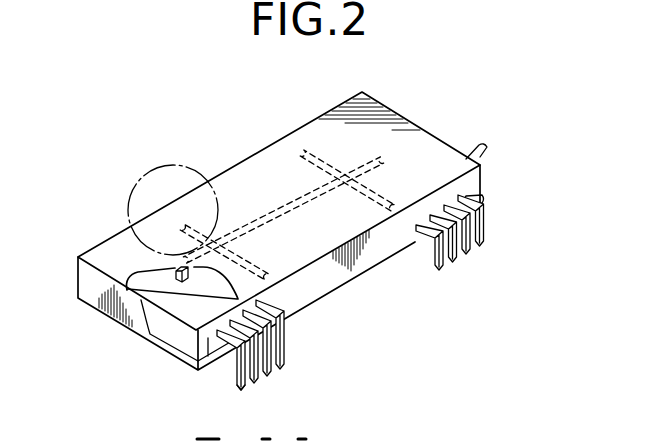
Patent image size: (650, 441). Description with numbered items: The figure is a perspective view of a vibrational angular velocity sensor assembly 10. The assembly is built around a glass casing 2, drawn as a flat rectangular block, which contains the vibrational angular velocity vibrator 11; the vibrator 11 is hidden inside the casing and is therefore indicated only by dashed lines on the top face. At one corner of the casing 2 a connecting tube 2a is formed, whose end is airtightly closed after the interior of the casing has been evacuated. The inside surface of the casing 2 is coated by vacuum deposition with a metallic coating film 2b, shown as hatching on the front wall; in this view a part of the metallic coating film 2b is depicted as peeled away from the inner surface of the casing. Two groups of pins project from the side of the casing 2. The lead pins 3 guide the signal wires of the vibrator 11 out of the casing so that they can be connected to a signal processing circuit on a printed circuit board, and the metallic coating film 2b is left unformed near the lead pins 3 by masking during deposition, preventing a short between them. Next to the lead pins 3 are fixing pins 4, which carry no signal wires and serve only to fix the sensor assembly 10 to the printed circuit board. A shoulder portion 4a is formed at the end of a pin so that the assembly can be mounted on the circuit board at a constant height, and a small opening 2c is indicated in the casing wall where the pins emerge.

The vibrational angular velocity sensor assembly 10 is at (299, 241).
The glass casing 2 is at (299, 229).
The connecting tube 2a is at (487, 148).
The metallic coating film 2b is at (116, 263).
The terminal opening 2c is at (484, 203).
The lead pins 3 is at (469, 248).
The fixing pins 4 is at (487, 238).
The shoulder portion 4a is at (243, 388).
The vibrational angular velocity vibrator 11 is at (261, 205).